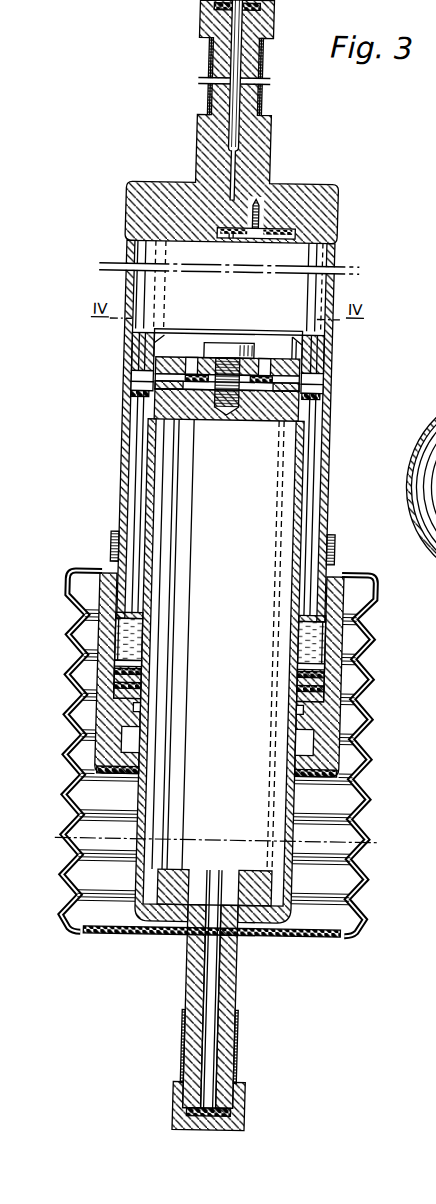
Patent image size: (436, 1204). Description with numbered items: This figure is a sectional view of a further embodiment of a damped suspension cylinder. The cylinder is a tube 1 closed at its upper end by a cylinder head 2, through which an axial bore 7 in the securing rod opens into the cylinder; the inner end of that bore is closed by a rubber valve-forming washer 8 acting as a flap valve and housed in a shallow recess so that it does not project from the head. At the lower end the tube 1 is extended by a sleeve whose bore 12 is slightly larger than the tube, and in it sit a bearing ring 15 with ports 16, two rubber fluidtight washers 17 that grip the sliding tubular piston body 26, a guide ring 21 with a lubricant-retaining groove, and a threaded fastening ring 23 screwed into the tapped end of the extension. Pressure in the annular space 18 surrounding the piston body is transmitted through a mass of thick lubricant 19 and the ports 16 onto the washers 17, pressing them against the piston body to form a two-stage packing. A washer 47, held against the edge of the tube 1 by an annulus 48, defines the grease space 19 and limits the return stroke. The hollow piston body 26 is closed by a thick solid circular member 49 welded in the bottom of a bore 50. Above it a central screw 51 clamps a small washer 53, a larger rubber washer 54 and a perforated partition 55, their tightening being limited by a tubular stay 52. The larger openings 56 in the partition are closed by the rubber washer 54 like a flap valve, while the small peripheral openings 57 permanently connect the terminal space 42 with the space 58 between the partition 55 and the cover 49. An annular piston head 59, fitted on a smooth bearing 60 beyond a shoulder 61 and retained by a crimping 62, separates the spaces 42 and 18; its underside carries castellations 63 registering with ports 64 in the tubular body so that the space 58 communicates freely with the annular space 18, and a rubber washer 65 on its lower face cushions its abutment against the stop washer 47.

The tube 1 is at (330, 289).
The cylinder head 2 is at (283, 200).
The bore 7 is at (229, 146).
The valve-forming washer 8 is at (222, 236).
The bore 12 is at (330, 636).
The bearing ring 15 is at (334, 672).
The ports 16 is at (330, 654).
The fluidtight washers 17 is at (303, 685).
The annular space 18 is at (314, 503).
The mass of thick lubricant 19 is at (304, 650).
The ring 21 is at (306, 721).
The fastening ring 23 is at (332, 776).
The tubular piston body 26 is at (292, 558).
The terminal space 42 is at (288, 258).
The washer 47 is at (350, 578).
The annulus 48 is at (335, 622).
The solid circular member 49 is at (253, 414).
The bore 50 is at (281, 389).
The central screw 51 is at (228, 352).
The tubular stay 52 is at (212, 398).
The washer of small diameter 53 is at (185, 383).
The rubber washer 54 is at (172, 392).
The perforated partition 55 is at (291, 371).
The openings 56 is at (188, 368).
The openings 57 is at (288, 372).
The space 58 is at (293, 397).
The annular piston head 59 is at (134, 360).
The smooth bearing 60 is at (156, 369).
The shoulder 61 is at (147, 390).
The crimping 62 is at (152, 332).
The castellations 63 is at (308, 392).
The ports 64 is at (291, 384).
The rubber washer 65 is at (306, 403).